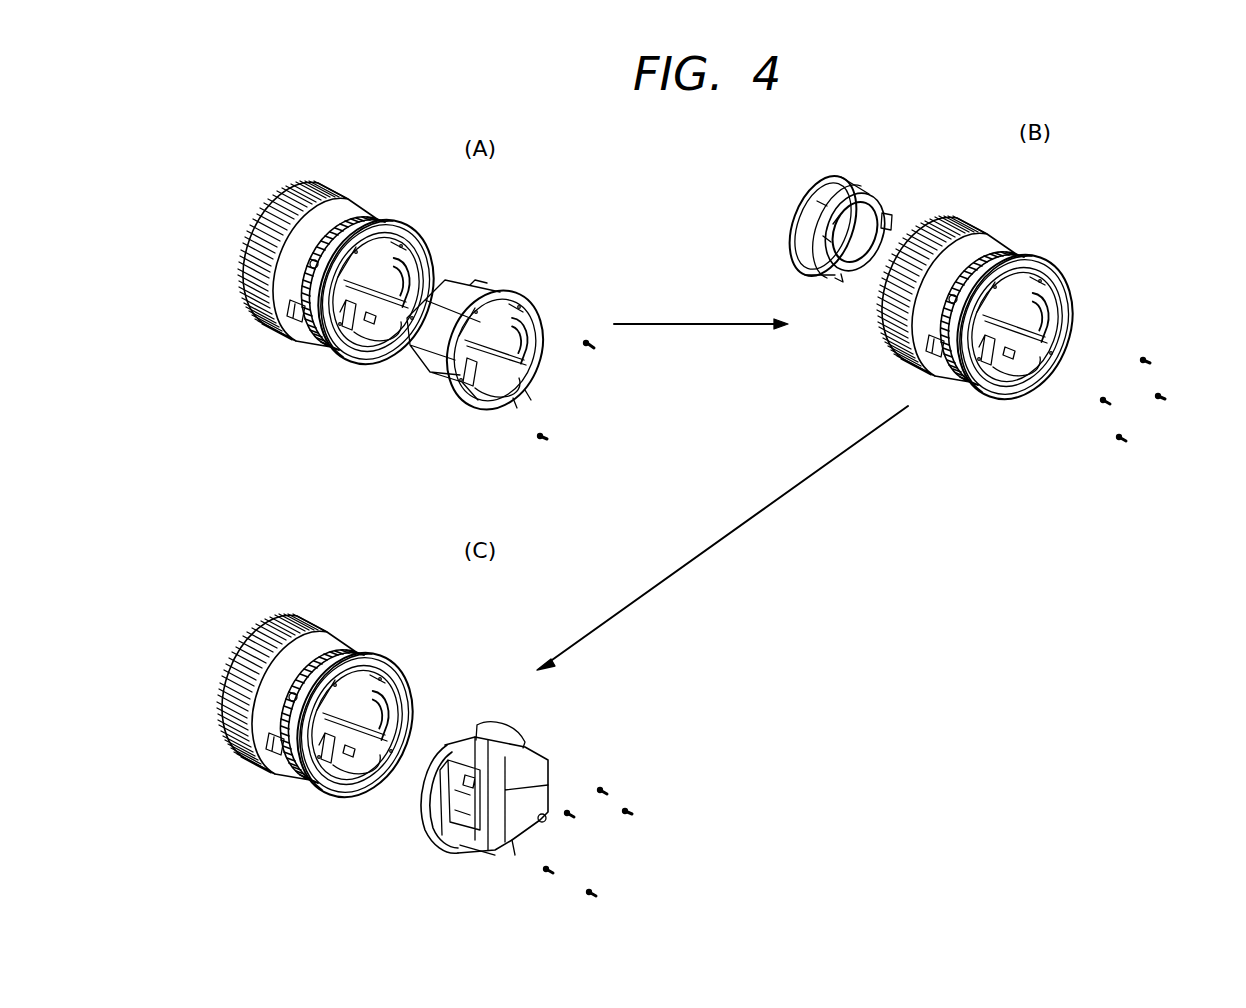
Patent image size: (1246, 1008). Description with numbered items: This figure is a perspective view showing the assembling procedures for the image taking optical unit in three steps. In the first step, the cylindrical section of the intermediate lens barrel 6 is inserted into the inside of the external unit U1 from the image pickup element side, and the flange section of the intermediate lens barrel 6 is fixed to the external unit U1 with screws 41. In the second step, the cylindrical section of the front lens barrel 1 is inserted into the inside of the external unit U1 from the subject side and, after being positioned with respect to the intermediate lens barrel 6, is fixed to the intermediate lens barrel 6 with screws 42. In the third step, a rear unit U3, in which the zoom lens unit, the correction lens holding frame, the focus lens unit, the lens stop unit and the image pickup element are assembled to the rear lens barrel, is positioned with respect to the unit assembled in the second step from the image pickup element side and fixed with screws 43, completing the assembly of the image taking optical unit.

The external unit U1 is at (360, 214).
The intermediate lens barrel 6 is at (468, 290).
The screws 41 is at (548, 437).
The front lens barrel 1 is at (864, 186).
The screws 42 is at (1166, 397).
The rear unit U3 is at (535, 752).
The screws 43 is at (630, 811).